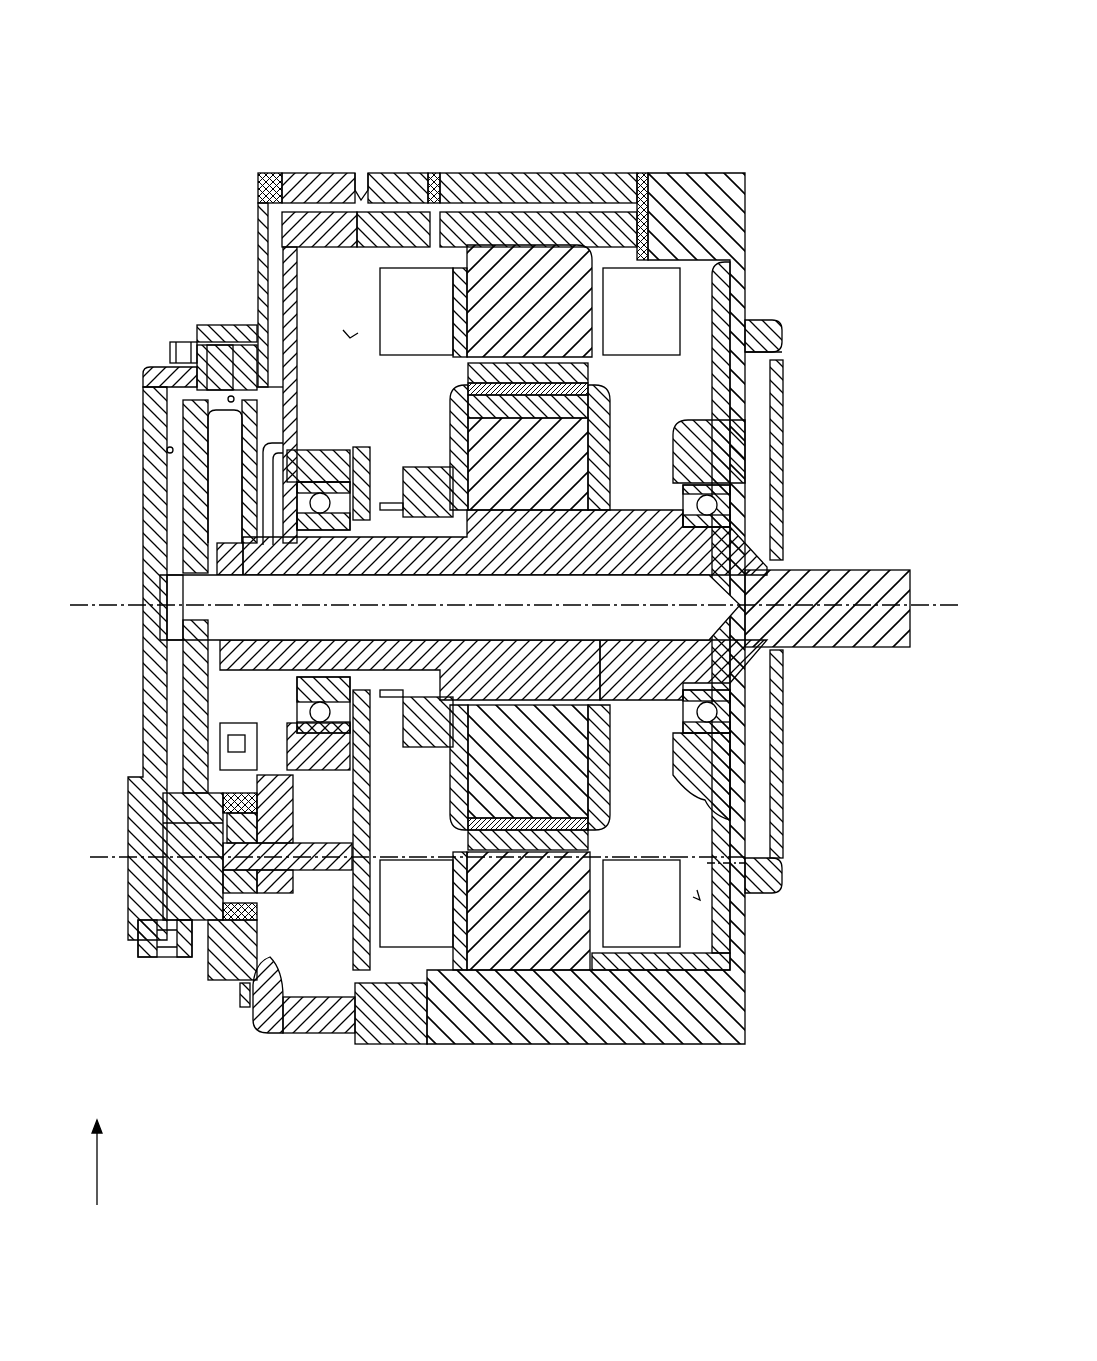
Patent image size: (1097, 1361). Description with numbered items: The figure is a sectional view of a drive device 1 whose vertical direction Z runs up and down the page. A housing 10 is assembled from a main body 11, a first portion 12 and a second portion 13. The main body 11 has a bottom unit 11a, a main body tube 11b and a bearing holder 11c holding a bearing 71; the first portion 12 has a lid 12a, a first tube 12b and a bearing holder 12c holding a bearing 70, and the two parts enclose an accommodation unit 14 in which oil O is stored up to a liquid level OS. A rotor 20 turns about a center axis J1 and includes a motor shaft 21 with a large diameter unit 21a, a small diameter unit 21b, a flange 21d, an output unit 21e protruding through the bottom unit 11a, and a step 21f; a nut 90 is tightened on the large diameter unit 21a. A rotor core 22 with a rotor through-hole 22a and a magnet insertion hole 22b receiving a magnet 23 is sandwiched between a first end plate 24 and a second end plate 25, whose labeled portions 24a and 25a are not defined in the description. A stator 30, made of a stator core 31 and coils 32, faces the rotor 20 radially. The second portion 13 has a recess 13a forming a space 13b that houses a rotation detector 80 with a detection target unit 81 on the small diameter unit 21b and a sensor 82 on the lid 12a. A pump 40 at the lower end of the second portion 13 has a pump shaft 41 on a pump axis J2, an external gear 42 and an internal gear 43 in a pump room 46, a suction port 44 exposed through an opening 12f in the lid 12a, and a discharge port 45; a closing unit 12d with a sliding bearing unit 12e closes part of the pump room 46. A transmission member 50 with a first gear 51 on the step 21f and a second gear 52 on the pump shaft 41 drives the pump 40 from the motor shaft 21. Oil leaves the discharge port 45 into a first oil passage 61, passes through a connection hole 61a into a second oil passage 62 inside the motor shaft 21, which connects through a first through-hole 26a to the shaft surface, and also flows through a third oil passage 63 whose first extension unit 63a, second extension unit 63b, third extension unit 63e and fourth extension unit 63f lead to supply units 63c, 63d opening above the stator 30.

The drive device 1 is at (825, 55).
The housing 10 is at (780, 167).
The main body 11 is at (620, 165).
The bottom unit 11a is at (748, 300).
The main body tube 11b is at (574, 195).
The bearing holder 11c is at (690, 753).
The first portion 12 is at (289, 165).
The lid 12a is at (262, 268).
The first tube 12b is at (325, 185).
The bearing holder 12c is at (320, 465).
The closing unit 12d is at (355, 1000).
The sliding bearing unit 12e is at (283, 822).
The opening 12f is at (280, 943).
The second portion 13 is at (143, 365).
The recess 13a is at (236, 388).
The space 13b is at (222, 437).
The accommodation unit 14 is at (350, 335).
The rotor 20 is at (635, 425).
The motor shaft 21 is at (765, 545).
The large diameter unit 21a is at (657, 548).
The small diameter unit 21b is at (243, 560).
The flange 21d is at (680, 775).
The output unit 21e is at (850, 638).
The step 21f is at (385, 685).
The rotor core 22 is at (558, 790).
The rotor through-hole 22a is at (603, 447).
The magnet insertion hole 22b is at (750, 342).
The magnet 23 is at (512, 830).
The first end plate 24 is at (452, 795).
The rotor holder corner 24a is at (450, 388).
The second end plate 25 is at (605, 818).
The rotor holder wall 25a is at (612, 398).
The first through-hole 26a is at (455, 555).
The stator 30 is at (705, 316).
The stator core 31 is at (553, 280).
The coil 32 is at (653, 288).
The pump 40 is at (220, 946).
The pump shaft 41 is at (292, 822).
The external gear 42 is at (235, 838).
The internal gear 43 is at (195, 922).
The suction port 44 is at (255, 905).
The discharge port 45 is at (235, 822).
The pump room 46 is at (225, 800).
The transmission member 50 is at (405, 770).
The first gear 51 is at (365, 732).
The second gear 52 is at (358, 836).
The first oil passage 61 is at (163, 707).
The connection hole 61a is at (190, 610).
The second oil passage 62 is at (640, 630).
The third oil passage 63 is at (492, 195).
The first extension unit 63a is at (166, 449).
The second extension unit 63b is at (228, 395).
The supply unit 63c is at (455, 200).
The supply unit 63d is at (650, 232).
The third extension unit 63e is at (272, 228).
The fourth extension unit 63f is at (398, 212).
The bearing 70 is at (325, 500).
The bearing 71 is at (710, 503).
The rotation detector 80 is at (214, 702).
The detection target unit 81 is at (247, 503).
The sensor 82 is at (240, 742).
The nut 90 is at (428, 482).
The center axis J1 is at (100, 607).
The pump axis J2 is at (110, 860).
The oil O is at (700, 900).
The liquid level OS is at (748, 888).
The vertical direction Z is at (97, 1144).